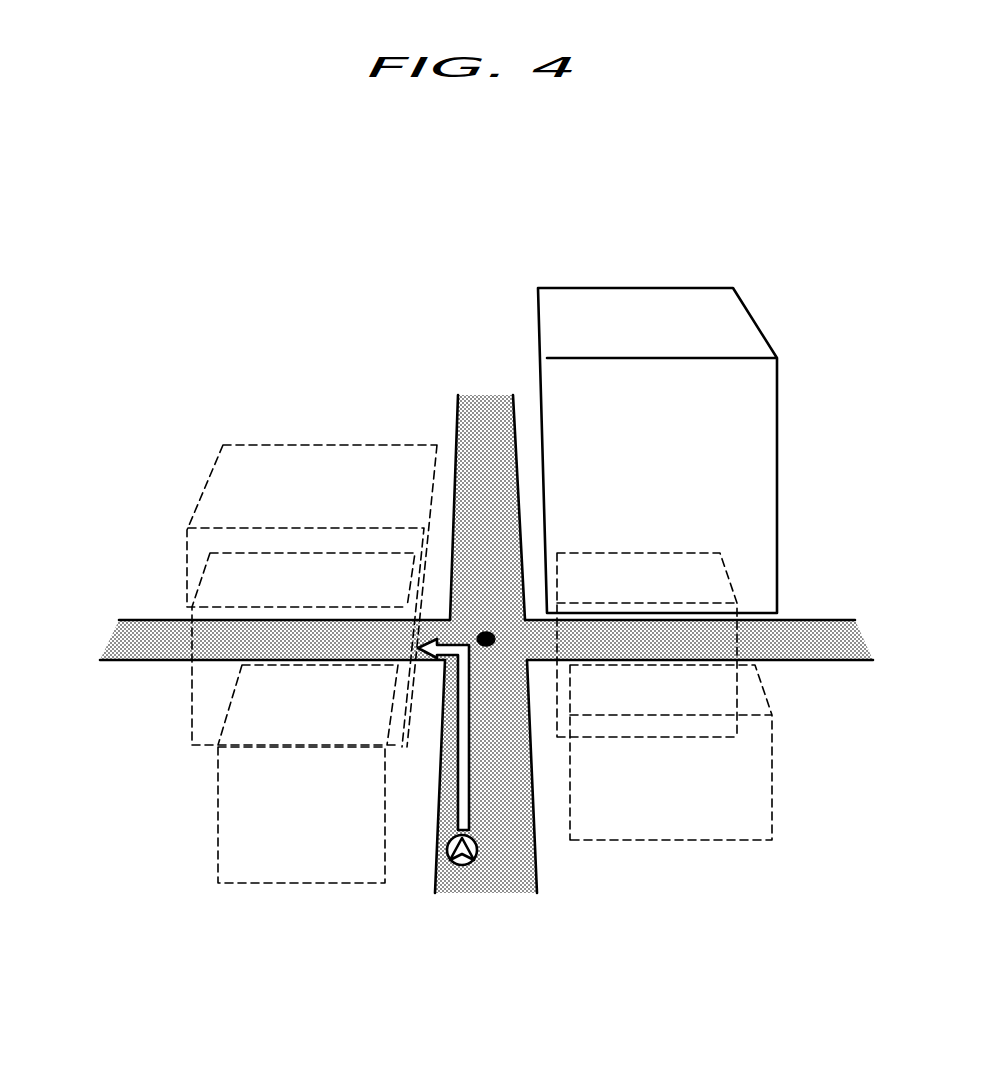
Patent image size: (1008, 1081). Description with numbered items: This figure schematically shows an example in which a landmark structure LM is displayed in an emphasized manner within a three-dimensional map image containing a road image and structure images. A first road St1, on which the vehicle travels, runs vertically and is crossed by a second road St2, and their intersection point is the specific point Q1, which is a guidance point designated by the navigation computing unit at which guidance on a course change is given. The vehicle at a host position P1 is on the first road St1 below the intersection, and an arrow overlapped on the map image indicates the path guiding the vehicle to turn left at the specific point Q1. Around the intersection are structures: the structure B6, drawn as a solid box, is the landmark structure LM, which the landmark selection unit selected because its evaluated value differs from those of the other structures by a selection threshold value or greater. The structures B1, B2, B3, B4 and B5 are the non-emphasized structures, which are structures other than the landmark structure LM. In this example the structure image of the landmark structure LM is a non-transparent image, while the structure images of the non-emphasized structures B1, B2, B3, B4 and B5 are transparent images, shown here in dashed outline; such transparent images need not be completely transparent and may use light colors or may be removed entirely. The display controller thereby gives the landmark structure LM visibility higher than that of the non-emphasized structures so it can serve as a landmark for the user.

The structure B1 is at (217, 855).
The structure B2 is at (360, 565).
The structure B3 is at (325, 468).
The structure B4 is at (720, 842).
The structure B5 is at (641, 570).
The structure B6 is at (778, 477).
The landmark structure LM is at (712, 449).
The first road St1 is at (539, 863).
The second road St2 is at (148, 632).
The specific point Q1 is at (491, 632).
The host position P1 is at (455, 870).